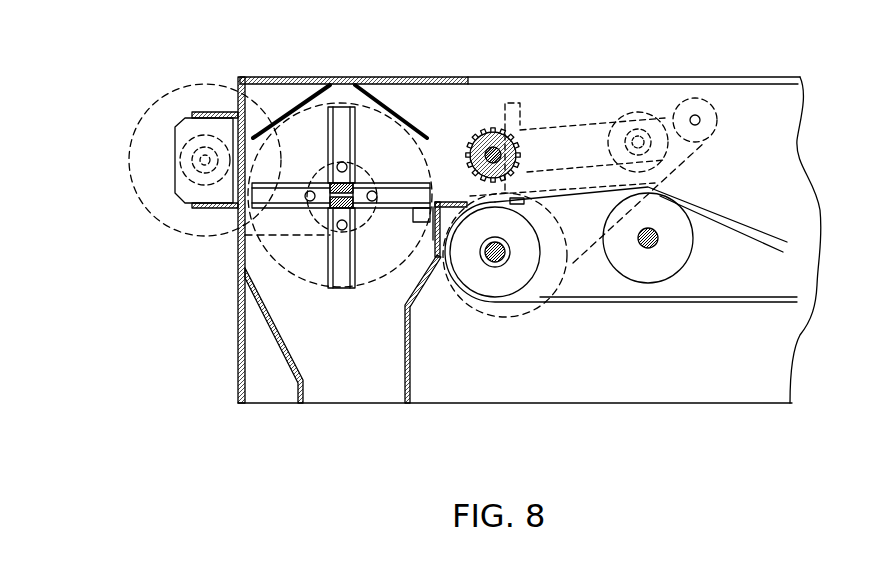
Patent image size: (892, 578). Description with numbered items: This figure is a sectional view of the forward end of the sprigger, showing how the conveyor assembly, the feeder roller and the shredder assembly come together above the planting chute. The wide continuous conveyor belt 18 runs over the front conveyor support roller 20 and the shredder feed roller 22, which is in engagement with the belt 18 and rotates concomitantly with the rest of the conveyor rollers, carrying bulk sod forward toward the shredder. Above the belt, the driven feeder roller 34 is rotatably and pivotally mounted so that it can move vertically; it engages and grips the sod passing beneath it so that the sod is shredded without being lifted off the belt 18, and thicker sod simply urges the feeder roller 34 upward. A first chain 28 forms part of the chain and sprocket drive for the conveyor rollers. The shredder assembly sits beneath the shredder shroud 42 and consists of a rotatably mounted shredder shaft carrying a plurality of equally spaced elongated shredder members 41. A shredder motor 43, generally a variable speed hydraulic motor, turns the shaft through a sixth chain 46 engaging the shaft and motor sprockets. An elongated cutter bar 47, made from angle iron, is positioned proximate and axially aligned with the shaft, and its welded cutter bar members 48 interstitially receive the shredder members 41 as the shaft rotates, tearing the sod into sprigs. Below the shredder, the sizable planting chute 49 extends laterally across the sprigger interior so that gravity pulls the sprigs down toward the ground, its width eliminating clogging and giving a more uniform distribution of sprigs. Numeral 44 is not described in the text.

The conveyor belt 18 is at (722, 304).
The front conveyor support roller 20 is at (668, 268).
The shredder feed roller 22 is at (493, 283).
The first chain 28 is at (553, 318).
The feeder roller 34 is at (487, 128).
The shredder members 41 is at (337, 125).
The shredder shroud 42 is at (415, 100).
The shredder motor 43 is at (198, 132).
The motor swing path 44 is at (147, 184).
The sixth chain 46 is at (300, 240).
The cutter bar 47 is at (451, 194).
The cutter bar members 48 is at (418, 265).
The planting chute 49 is at (322, 372).